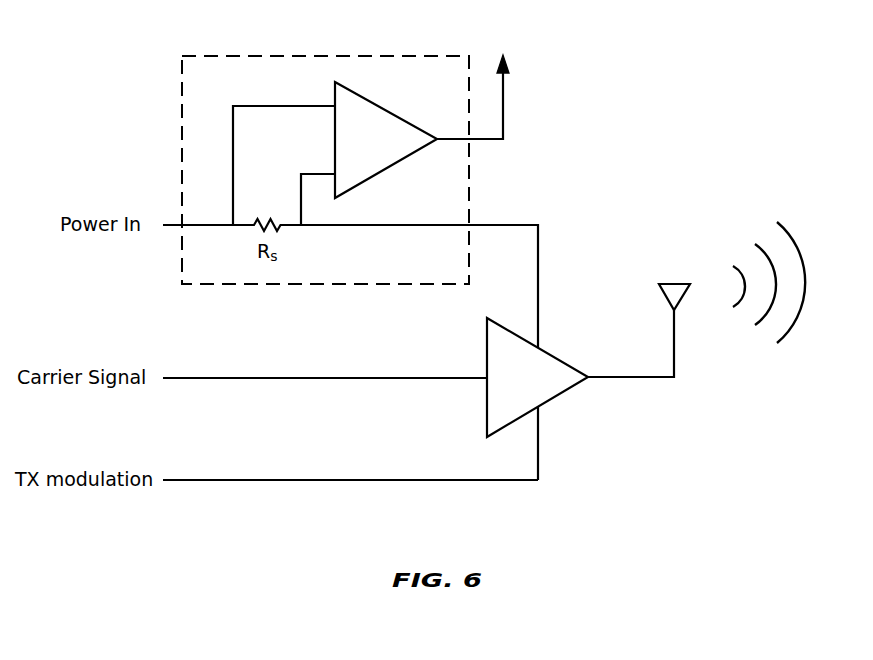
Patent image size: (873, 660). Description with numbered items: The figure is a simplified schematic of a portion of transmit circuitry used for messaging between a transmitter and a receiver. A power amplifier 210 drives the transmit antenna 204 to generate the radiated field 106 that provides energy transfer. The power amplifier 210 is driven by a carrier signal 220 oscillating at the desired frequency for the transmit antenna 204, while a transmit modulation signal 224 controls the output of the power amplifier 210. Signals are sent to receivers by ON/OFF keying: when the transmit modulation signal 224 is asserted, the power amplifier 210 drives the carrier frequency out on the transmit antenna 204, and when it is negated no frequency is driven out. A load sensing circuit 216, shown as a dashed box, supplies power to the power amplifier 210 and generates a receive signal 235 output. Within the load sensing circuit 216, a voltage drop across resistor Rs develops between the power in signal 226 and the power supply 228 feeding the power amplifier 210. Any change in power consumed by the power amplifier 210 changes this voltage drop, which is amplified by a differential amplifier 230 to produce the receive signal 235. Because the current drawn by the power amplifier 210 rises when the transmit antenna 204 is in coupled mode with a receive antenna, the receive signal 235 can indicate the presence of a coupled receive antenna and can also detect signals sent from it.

The load sensing circuit 216 is at (298, 56).
The power in signal 226 is at (223, 227).
The power supply 228 is at (352, 227).
The differential amplifier 230 is at (400, 163).
The receive signal 235 is at (503, 105).
The carrier signal 220 is at (218, 376).
The transmit modulation signal 224 is at (243, 478).
The power amplifier 210 is at (560, 356).
The transmit antenna 204 is at (660, 287).
The radiated field 106 is at (765, 203).